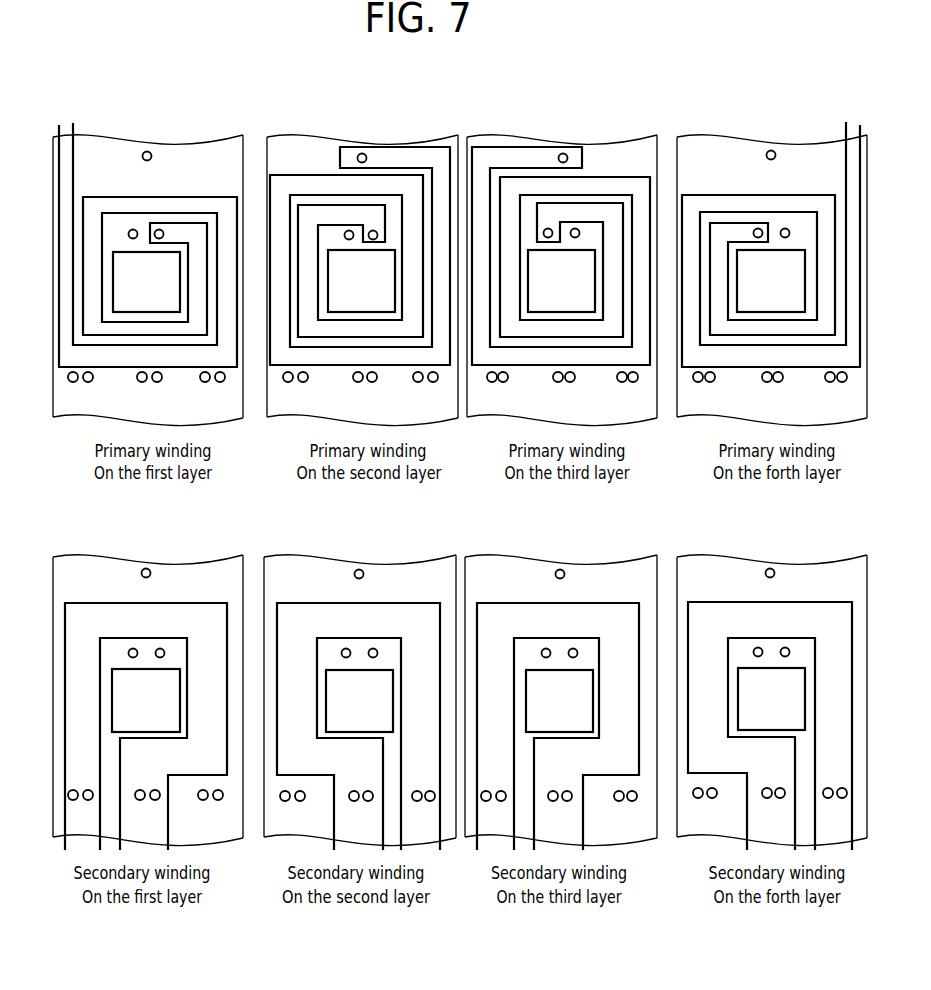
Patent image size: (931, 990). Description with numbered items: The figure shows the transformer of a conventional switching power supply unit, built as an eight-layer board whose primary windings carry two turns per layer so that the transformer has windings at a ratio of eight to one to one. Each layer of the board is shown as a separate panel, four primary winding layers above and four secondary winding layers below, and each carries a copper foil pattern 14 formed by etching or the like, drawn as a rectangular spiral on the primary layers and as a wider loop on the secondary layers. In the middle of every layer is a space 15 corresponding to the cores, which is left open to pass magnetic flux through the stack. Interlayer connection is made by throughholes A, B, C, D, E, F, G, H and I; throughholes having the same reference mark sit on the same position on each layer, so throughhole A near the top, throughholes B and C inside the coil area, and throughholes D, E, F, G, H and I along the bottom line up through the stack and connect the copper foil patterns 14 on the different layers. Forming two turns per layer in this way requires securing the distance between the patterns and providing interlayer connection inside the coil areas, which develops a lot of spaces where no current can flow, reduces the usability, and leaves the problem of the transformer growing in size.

The copper foil pattern 14 is at (103, 360).
The space 15 is at (150, 262).
The throughhole A is at (471, 365).
The throughhole B is at (755, 228).
The throughhole C is at (163, 230).
The throughhole D is at (385, 586).
The throughhole E is at (399, 586).
The throughhole F is at (453, 586).
The throughhole G is at (468, 586).
The throughhole H is at (518, 586).
The throughhole I is at (530, 586).